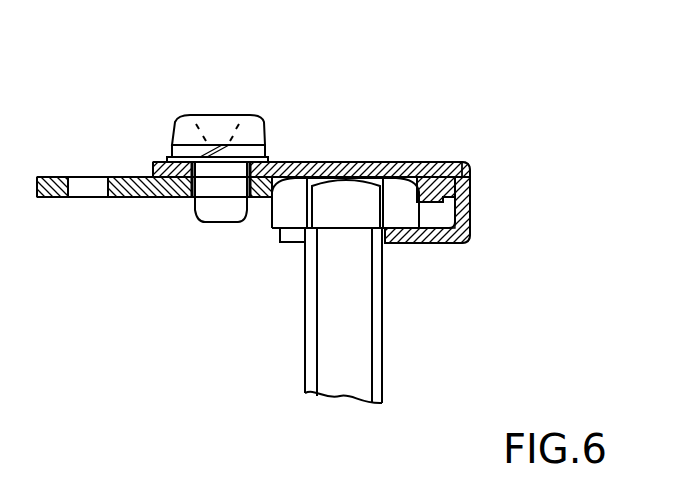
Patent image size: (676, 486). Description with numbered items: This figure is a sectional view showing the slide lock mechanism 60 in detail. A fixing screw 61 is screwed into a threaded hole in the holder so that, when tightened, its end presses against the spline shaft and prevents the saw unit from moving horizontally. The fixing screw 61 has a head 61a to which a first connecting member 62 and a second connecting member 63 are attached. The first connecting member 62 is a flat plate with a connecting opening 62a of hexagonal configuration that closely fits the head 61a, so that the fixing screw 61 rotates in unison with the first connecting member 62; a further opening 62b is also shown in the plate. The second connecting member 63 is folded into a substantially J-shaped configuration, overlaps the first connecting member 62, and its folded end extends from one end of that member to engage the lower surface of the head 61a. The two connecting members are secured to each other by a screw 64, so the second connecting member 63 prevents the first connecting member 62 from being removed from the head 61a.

The slide lock mechanism 60 is at (223, 290).
The fixing screw 61 is at (348, 345).
The head 61a is at (340, 210).
The first connecting member 62 is at (158, 198).
The connecting opening 62a is at (288, 166).
The hole 62b is at (72, 190).
The second connecting member 63 is at (472, 208).
The screw 64 is at (217, 127).